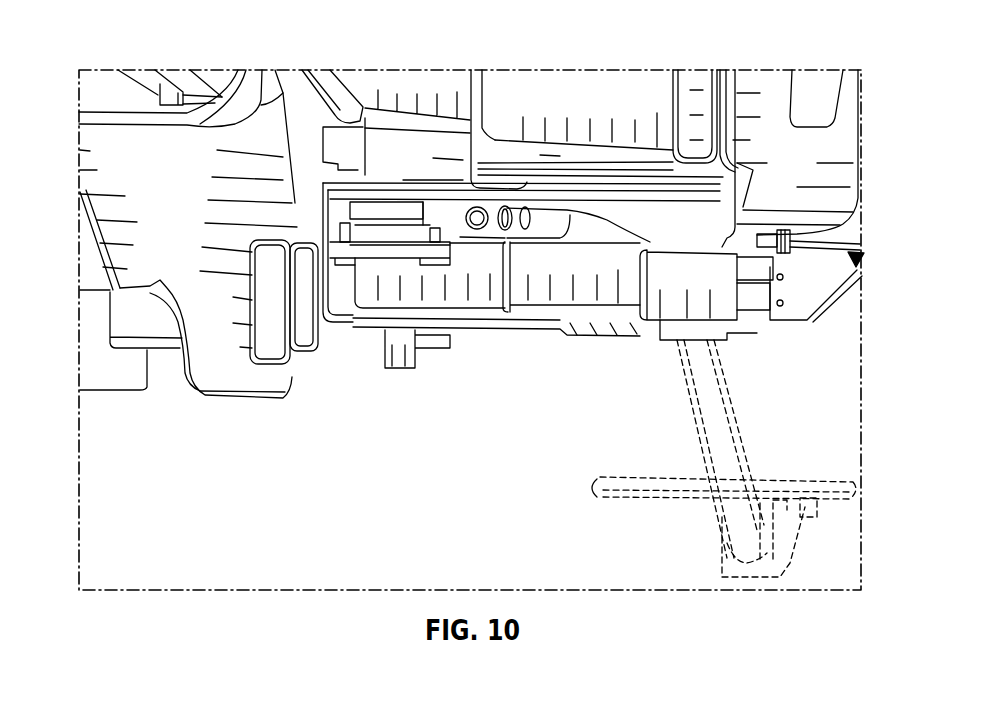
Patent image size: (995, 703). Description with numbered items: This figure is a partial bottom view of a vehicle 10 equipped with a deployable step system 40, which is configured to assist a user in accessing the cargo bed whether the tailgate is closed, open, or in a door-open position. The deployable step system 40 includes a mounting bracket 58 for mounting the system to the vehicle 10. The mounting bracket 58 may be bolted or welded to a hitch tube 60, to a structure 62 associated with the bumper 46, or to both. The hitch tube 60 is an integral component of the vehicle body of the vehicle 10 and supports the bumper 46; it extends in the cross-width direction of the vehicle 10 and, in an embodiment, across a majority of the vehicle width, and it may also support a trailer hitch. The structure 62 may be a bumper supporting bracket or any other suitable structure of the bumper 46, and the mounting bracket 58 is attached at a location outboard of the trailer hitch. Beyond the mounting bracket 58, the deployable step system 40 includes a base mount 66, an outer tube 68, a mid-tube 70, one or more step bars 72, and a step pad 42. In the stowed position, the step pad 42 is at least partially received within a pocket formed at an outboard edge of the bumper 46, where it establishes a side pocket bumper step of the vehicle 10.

The vehicle 10 is at (201, 58).
The deployable step system 40 is at (586, 363).
The step pad 42 is at (863, 246).
The bumper 46 is at (850, 134).
The mounting bracket 58 is at (352, 320).
The hitch tube 60 is at (273, 337).
The structure 62 is at (478, 147).
The base mount 66 is at (397, 298).
The outer tube 68 is at (542, 293).
The mid-tube 70 is at (667, 320).
The step bar 72 is at (757, 280).